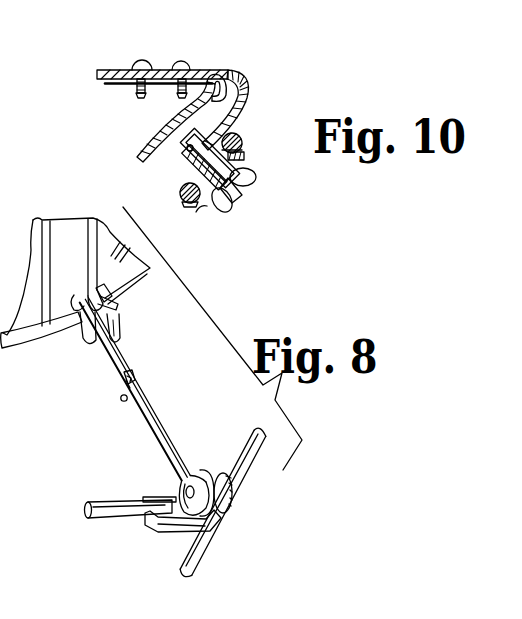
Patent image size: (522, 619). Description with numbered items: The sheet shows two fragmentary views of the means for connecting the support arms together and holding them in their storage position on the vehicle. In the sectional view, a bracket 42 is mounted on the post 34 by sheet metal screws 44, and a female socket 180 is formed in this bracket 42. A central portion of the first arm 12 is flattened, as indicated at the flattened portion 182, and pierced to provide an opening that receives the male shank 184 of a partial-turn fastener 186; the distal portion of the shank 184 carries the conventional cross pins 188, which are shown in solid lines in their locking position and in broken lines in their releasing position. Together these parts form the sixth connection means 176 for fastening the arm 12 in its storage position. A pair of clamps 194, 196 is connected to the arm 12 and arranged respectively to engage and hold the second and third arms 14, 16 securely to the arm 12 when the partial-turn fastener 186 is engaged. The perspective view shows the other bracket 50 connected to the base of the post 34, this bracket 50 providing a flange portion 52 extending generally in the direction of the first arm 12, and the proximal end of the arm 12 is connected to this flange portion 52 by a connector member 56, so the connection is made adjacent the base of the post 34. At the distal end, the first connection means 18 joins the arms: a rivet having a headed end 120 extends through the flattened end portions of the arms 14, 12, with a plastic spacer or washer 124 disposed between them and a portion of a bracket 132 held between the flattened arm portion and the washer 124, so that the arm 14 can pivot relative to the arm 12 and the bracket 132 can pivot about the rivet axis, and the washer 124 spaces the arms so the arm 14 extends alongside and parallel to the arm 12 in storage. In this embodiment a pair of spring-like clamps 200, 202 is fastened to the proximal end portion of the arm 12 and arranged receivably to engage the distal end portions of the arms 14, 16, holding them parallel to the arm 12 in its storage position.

In FIG. 8, the first arm 12 is at (161, 442).
In FIG. 10, the second arm 14 is at (247, 155).
In FIG. 8, the second arm 14 is at (204, 552).
In FIG. 10, the third arm 16 is at (180, 196).
In FIG. 8, the third arm 16 is at (117, 511).
In FIG. 8, the first connection means 18 is at (140, 477).
In FIG. 10, the post 34 is at (147, 146).
In FIG. 8, the post 34 is at (65, 243).
In FIG. 10, the bracket 42 is at (244, 90).
In FIG. 10, the sheet metal screws 44 is at (176, 60).
In FIG. 8, the bracket 50 is at (104, 286).
In FIG. 8, the flange portion 52 is at (110, 298).
In FIG. 8, the connector member 56 is at (75, 300).
In FIG. 8, the headed end 120 is at (190, 486).
In FIG. 8, the washer 124 is at (232, 499).
In FIG. 8, the bracket 132 is at (178, 532).
In FIG. 10, the sixth connection means 176 is at (246, 206).
In FIG. 8, the sixth connection means 176 is at (120, 416).
In FIG. 10, the female socket 180 is at (189, 129).
In FIG. 10, the flattened portion 182 is at (240, 187).
In FIG. 8, the flattened portion 182 is at (125, 383).
In FIG. 10, the male shank 184 is at (234, 200).
In FIG. 8, the male shank 184 is at (132, 373).
In FIG. 10, the partial-turn fastener 186 is at (253, 178).
In FIG. 8, the partial-turn fastener 186 is at (120, 400).
In FIG. 10, the cross pins 188 is at (187, 143).
In FIG. 8, the cross pins 188 is at (133, 379).
In FIG. 10, the clamp 194 is at (234, 133).
In FIG. 10, the clamp 196 is at (197, 210).
In FIG. 8, the spring-like clamp 200 is at (123, 336).
In FIG. 8, the spring-like clamp 202 is at (73, 340).